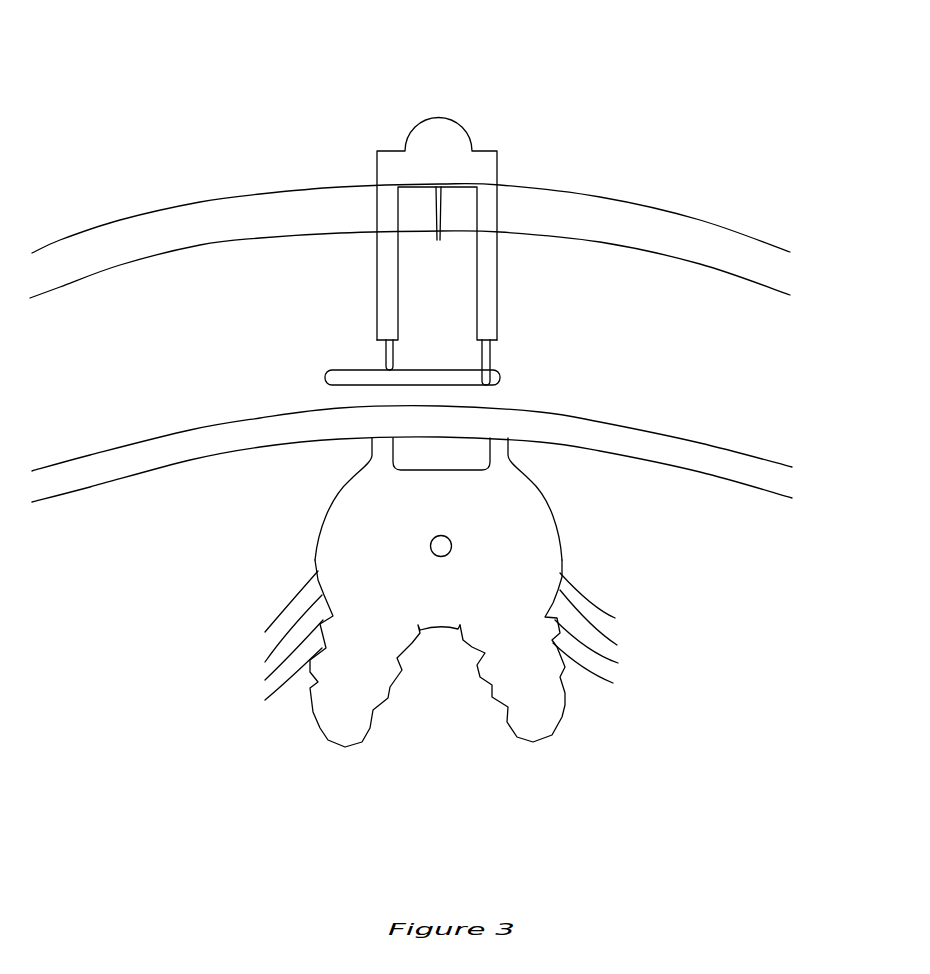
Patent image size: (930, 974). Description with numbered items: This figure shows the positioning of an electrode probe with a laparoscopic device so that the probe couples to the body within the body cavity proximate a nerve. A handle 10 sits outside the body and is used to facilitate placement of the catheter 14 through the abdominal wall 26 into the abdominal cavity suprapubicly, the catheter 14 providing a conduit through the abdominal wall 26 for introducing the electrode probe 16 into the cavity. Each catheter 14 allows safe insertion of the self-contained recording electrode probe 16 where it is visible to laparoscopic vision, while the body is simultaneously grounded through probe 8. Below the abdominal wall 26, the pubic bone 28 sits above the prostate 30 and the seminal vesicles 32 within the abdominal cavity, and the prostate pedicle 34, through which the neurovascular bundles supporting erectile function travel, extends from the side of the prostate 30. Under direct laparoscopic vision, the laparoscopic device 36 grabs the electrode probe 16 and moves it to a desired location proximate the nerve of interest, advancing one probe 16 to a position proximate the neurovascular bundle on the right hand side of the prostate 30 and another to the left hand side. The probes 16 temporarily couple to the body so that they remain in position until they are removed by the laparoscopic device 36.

The handle 10 is at (410, 132).
The catheter 14 is at (377, 270).
The probe 8 is at (438, 241).
The electrode probe 16 is at (598, 322).
The abdominal wall 26 is at (612, 222).
The pubic bone 28 is at (628, 442).
The prostate 30 is at (550, 504).
The seminal vesicles 32 is at (545, 709).
The prostate pedicle 34 is at (680, 616).
The laparoscopic device 36 is at (325, 371).